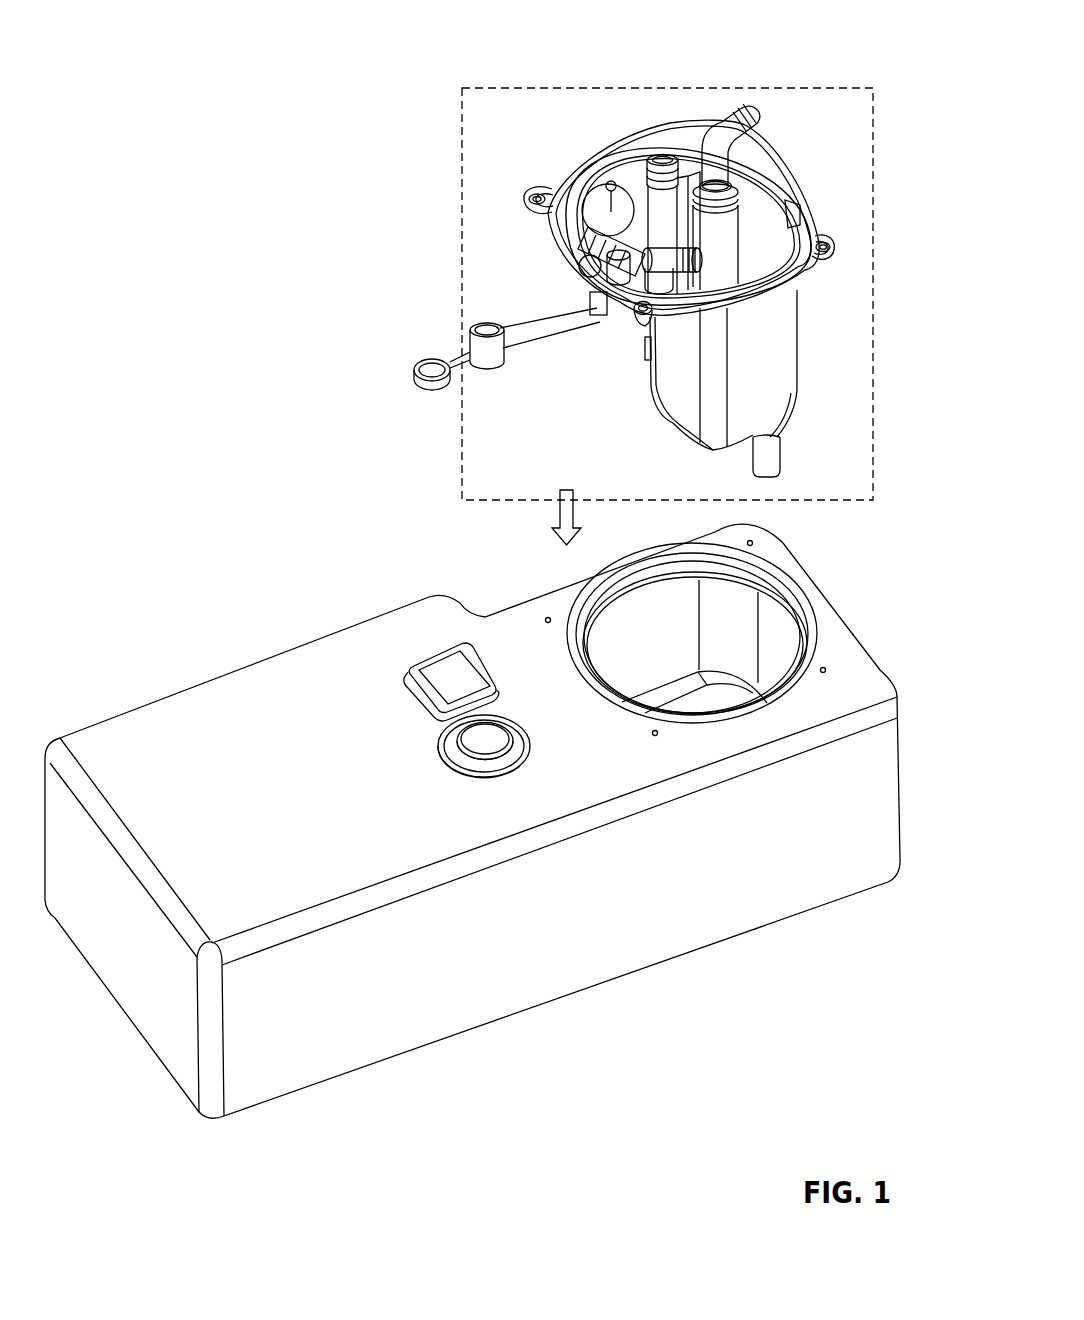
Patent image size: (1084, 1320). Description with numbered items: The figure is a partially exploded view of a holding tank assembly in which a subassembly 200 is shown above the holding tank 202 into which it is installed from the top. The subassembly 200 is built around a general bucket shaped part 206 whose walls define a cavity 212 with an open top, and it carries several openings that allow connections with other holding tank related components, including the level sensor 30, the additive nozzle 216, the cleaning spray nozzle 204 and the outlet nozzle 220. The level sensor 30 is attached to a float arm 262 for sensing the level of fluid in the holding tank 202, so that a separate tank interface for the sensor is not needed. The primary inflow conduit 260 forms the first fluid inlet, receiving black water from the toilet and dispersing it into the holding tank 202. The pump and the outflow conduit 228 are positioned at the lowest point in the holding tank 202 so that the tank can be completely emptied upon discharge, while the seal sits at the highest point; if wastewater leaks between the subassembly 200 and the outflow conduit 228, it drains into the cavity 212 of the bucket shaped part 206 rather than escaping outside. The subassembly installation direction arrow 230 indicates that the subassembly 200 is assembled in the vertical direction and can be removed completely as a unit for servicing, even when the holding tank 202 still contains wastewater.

The subassembly 200 is at (456, 171).
The level sensor 30 is at (590, 157).
The cleaning spray nozzle 204 is at (530, 195).
The cavity 212 is at (780, 230).
The outflow conduit 228 is at (720, 217).
The outlet nozzle 220 is at (723, 130).
The primary inflow conduit 260 is at (662, 167).
The additive nozzle 216 is at (612, 322).
The bucket shaped part 206 is at (762, 347).
The float arm 262 is at (485, 358).
The subassembly installation direction arrow 230 is at (553, 517).
The holding tank 202 is at (166, 684).